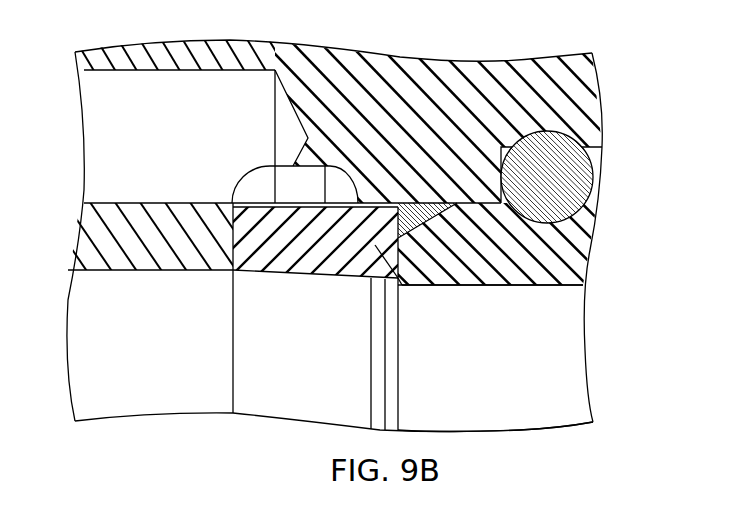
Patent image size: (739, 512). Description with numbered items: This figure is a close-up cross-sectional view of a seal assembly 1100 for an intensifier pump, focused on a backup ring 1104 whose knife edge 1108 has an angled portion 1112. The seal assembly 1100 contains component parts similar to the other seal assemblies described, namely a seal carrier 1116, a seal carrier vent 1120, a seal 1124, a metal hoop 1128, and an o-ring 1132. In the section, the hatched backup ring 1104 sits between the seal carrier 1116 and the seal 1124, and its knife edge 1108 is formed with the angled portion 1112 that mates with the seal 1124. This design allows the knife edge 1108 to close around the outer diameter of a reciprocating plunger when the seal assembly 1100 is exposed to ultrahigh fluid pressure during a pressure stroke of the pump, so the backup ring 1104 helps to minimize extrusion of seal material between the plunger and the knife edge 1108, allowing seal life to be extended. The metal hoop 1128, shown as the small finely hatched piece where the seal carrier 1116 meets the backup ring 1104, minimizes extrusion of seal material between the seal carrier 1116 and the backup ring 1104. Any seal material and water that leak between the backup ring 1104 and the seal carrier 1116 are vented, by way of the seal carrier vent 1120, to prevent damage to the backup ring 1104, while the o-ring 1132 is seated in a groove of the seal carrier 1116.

The seal assembly 1100 is at (385, 223).
The backup ring 1104 is at (297, 265).
The knife edge 1108 is at (400, 284).
The angled portion 1112 is at (403, 265).
The seal carrier 1116 is at (403, 73).
The seal carrier vent 1120 is at (103, 155).
The seal 1124 is at (560, 358).
The metal hoop 1128 is at (418, 210).
The o-ring 1132 is at (556, 147).